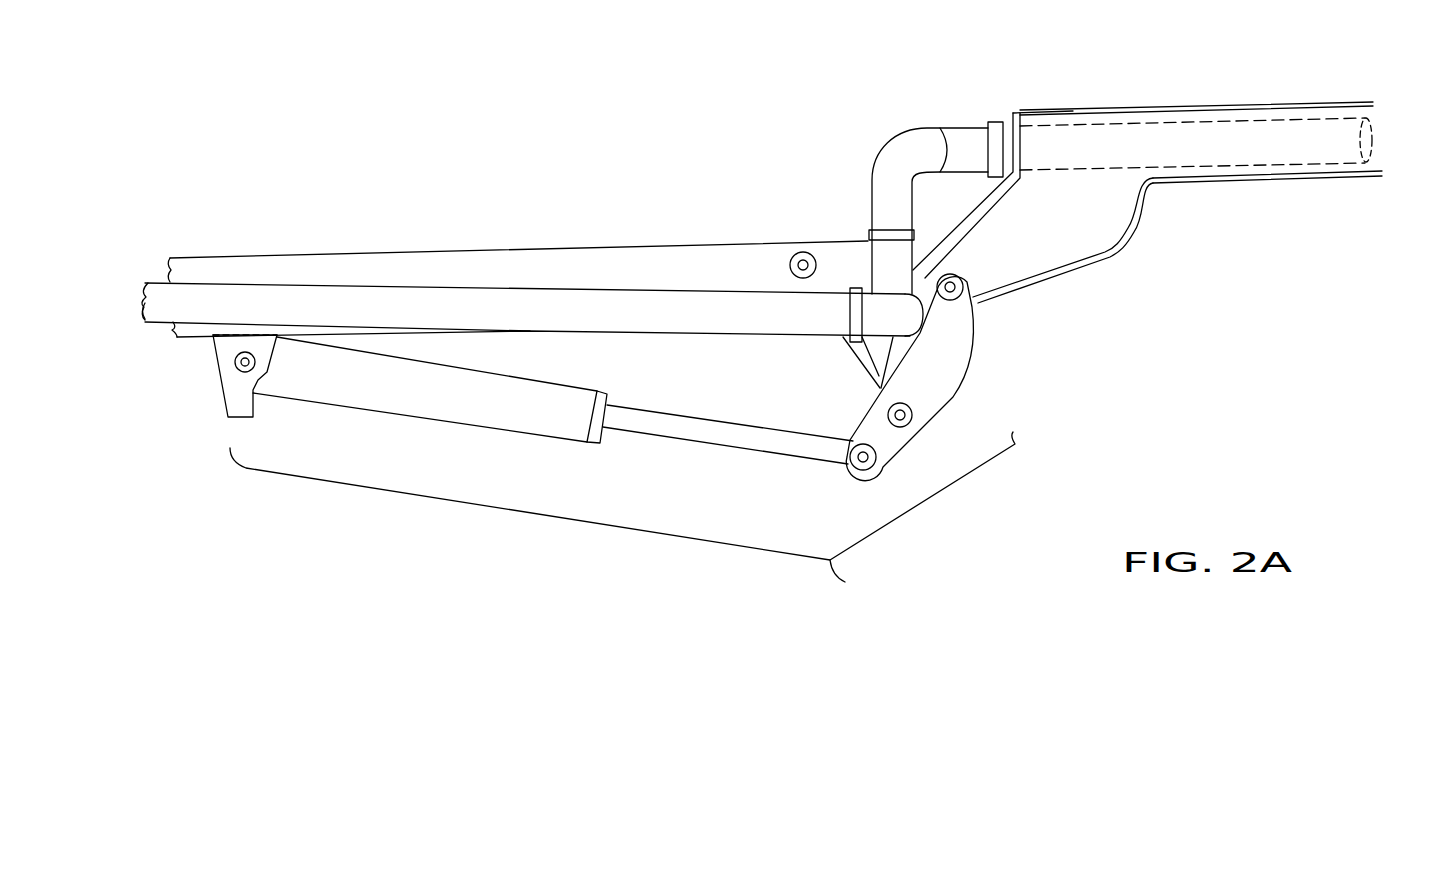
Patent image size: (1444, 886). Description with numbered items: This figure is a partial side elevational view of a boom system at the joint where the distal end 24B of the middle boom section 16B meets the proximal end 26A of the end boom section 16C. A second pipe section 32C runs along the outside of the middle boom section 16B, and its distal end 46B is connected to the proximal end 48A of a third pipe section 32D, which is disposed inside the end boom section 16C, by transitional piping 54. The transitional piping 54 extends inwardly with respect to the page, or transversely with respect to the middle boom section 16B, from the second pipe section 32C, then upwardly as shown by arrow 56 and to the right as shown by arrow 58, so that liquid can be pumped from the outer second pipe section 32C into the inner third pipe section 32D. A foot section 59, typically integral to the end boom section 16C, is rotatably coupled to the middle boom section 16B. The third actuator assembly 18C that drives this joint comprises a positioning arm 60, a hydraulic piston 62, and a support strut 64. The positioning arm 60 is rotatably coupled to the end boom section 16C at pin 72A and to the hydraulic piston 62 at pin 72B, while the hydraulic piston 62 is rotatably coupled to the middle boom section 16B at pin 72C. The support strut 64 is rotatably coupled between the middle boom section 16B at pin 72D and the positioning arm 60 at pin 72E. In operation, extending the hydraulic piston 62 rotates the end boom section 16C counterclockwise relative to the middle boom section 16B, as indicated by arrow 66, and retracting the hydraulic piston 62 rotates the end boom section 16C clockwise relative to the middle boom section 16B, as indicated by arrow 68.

The middle boom section 16B is at (628, 252).
The end boom section 16C is at (1215, 101).
The third actuator assembly 18C is at (622, 517).
The distal end of the middle boom section 24B is at (850, 267).
The proximal end of the end boom section 26A is at (1033, 120).
The second pipe section 32C is at (478, 308).
The third pipe section 32D is at (1135, 148).
The distal end of the second pipe section 46B is at (842, 313).
The proximal end of the third pipe section 48A is at (996, 123).
The transitional piping 54 is at (965, 150).
The arrow 56 is at (857, 165).
The arrow 58 is at (970, 93).
The foot section 59 is at (1077, 233).
The positioning arm 60 is at (953, 368).
The hydraulic piston 62 is at (473, 417).
The support strut 64 is at (878, 387).
The arrow 66 is at (1370, 30).
The arrow 68 is at (1423, 177).
The pin 72A is at (970, 286).
The pin 72B is at (887, 462).
The pin 72C is at (235, 362).
The pin 72D is at (800, 254).
The pin 72E is at (913, 418).